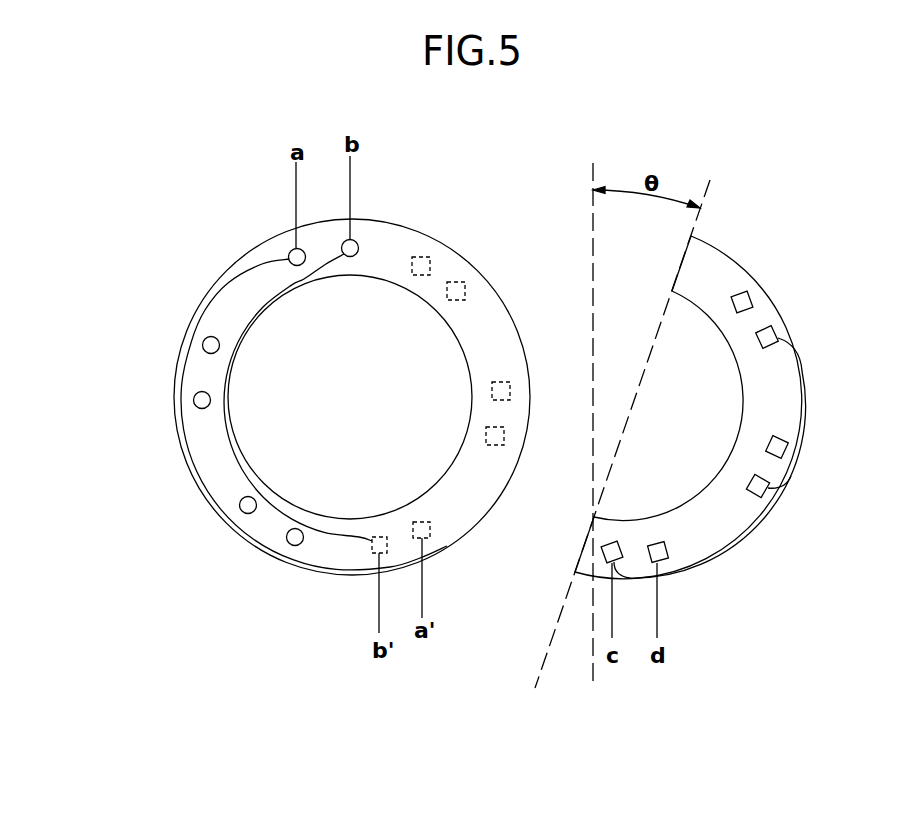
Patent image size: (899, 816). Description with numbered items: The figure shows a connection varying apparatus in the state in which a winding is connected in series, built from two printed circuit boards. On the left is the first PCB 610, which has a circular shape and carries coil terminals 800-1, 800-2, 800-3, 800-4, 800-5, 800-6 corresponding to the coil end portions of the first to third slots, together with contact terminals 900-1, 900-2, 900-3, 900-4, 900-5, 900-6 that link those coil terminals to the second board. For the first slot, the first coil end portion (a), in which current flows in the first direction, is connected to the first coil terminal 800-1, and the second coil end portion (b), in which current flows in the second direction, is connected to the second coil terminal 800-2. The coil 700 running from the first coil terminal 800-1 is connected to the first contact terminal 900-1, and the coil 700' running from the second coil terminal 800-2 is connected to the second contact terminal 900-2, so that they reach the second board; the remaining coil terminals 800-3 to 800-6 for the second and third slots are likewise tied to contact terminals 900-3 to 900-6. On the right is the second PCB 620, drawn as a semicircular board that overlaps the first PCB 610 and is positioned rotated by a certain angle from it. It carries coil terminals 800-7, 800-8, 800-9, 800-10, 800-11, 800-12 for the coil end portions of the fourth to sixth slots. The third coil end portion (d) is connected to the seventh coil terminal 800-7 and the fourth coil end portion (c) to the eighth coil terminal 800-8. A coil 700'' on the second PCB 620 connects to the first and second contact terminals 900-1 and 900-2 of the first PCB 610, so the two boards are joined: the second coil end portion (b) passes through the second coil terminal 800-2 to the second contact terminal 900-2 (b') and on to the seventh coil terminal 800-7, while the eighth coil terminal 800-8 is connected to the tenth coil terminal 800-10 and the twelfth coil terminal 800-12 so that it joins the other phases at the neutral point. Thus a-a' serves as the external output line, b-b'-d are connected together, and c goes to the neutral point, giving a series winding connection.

The coil 700 is at (291, 414).
The coil 700' is at (298, 397).
The coil 700'' is at (833, 384).
The first PCB 610 is at (176, 428).
The second PCB 620 is at (790, 497).
The first coil terminal 800-1 is at (288, 252).
The second coil terminal 800-2 is at (358, 246).
The coil terminal 800-3 is at (195, 398).
The coil terminal 800-4 is at (204, 342).
The coil terminal 800-5 is at (288, 542).
The coil terminal 800-6 is at (241, 511).
The seventh coil terminal 800-7 is at (667, 553).
The eighth coil terminal 800-8 is at (618, 543).
The coil terminal 800-9 is at (785, 450).
The tenth coil terminal 800-10 is at (757, 497).
The coil terminal 800-11 is at (755, 300).
The twelfth coil terminal 800-12 is at (778, 332).
The first contact terminal 900-1 is at (430, 533).
The second contact terminal 900-2 is at (370, 555).
The contact terminal 900-3 is at (492, 391).
The contact terminal 900-4 is at (485, 436).
The contact terminal 900-5 is at (430, 265).
The contact terminal 900-6 is at (466, 290).